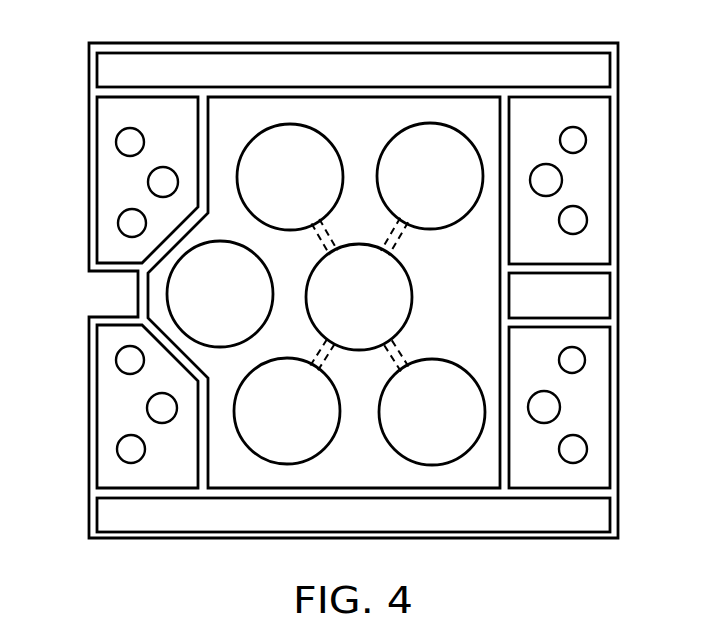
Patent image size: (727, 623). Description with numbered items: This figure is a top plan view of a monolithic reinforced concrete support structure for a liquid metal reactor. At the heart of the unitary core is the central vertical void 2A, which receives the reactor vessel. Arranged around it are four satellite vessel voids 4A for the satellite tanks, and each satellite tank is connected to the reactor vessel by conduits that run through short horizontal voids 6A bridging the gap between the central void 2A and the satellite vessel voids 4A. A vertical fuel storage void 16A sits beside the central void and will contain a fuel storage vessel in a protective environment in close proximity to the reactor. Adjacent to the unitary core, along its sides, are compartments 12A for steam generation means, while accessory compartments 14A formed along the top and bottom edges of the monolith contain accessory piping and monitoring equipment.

The central vertical void 2A is at (393, 307).
The satellite vessel voids 4A is at (317, 163).
The horizontal voids 6A is at (324, 225).
The compartments for steam generation means 12A is at (107, 173).
The accessory compartments 14A is at (433, 67).
The vertical fuel storage void 16A is at (252, 297).